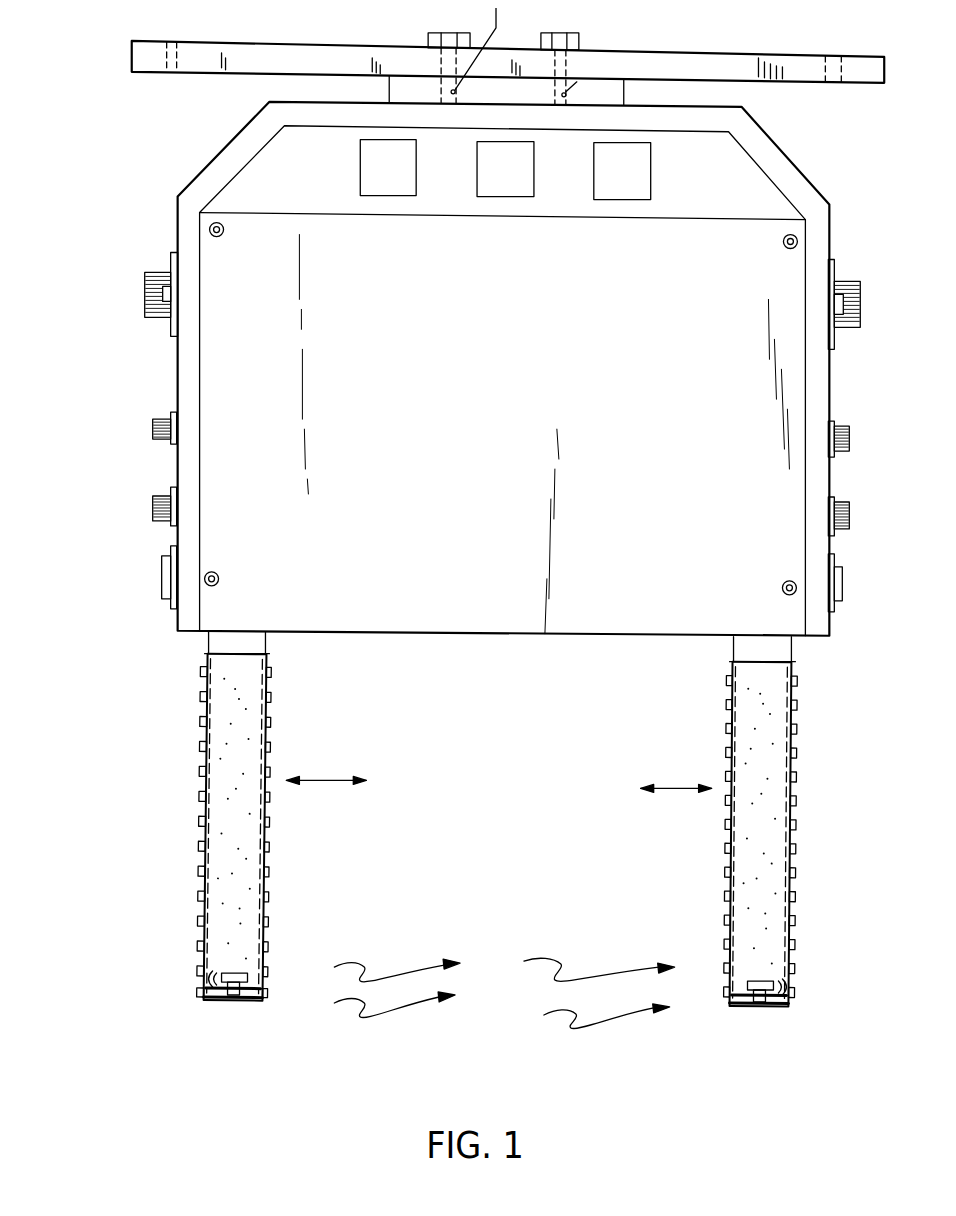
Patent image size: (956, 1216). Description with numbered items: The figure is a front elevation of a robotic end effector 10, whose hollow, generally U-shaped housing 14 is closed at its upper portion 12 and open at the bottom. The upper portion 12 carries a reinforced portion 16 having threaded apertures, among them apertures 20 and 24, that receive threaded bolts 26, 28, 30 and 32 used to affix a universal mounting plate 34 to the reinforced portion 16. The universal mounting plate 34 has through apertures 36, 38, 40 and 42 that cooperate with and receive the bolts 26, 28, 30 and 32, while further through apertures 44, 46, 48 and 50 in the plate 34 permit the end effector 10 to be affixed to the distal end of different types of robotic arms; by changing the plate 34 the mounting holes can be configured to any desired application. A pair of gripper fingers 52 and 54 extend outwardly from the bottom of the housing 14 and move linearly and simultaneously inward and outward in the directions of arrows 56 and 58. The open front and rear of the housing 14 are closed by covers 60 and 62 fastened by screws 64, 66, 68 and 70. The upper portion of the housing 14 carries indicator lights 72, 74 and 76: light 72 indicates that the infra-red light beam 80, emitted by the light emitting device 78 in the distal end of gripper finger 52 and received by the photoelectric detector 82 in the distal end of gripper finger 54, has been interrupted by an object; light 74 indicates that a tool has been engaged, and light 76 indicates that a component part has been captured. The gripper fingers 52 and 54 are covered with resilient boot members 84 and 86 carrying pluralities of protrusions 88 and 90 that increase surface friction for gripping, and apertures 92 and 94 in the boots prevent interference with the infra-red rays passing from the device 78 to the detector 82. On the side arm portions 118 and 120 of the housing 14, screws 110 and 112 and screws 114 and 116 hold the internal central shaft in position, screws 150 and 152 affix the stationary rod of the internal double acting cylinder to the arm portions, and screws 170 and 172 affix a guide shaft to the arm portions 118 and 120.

The end effector 10 is at (108, 302).
The upper portion 12 is at (457, 358).
The housing 14 is at (457, 358).
The reinforced portion 16 is at (610, 97).
The threaded aperture 20 is at (605, 56).
The threaded aperture 24 is at (578, 34).
The threaded bolt 26 is at (446, 55).
The threaded bolt 28 is at (605, 56).
The threaded bolt 30 is at (446, 55).
The threaded bolt 32 is at (605, 56).
The universal mounting plate 34 is at (313, 47).
The through aperture 36 is at (446, 55).
The through aperture 38 is at (605, 56).
The through aperture 40 is at (445, 15).
The through aperture 42 is at (605, 56).
The through aperture 44 is at (210, 40).
The through aperture 46 is at (177, 33).
The through aperture 48 is at (803, 52).
The through aperture 50 is at (835, 67).
The gripper finger 52 is at (241, 822).
The gripper finger 54 is at (763, 838).
The arrow 56 is at (312, 765).
The arrow 58 is at (683, 789).
The cover 60 is at (457, 358).
The cover 62 is at (677, 113).
The screw 64 is at (224, 233).
The screw 66 is at (784, 242).
The screw 68 is at (217, 574).
The screw 70 is at (784, 581).
The indicator light 72 is at (380, 190).
The indicator light 74 is at (500, 190).
The indicator light 76 is at (617, 190).
The light emitting device 78 is at (260, 980).
The infra-red light beam 80 is at (504, 992).
The photoelectric detector 82 is at (762, 989).
The resilient boot member 84 is at (241, 822).
The resilient boot member 86 is at (763, 838).
The protrusions 88 is at (241, 822).
The protrusions 90 is at (763, 838).
The aperture 92 is at (240, 978).
The aperture 94 is at (760, 985).
The screw 110 is at (851, 427).
The screw 112 is at (848, 502).
The screw 114 is at (152, 431).
The screw 116 is at (152, 504).
The arm portion 118 is at (808, 386).
The arm portion 120 is at (190, 352).
The screw 150 is at (136, 296).
The screw 152 is at (866, 304).
The screw 170 is at (152, 273).
The screw 172 is at (862, 290).